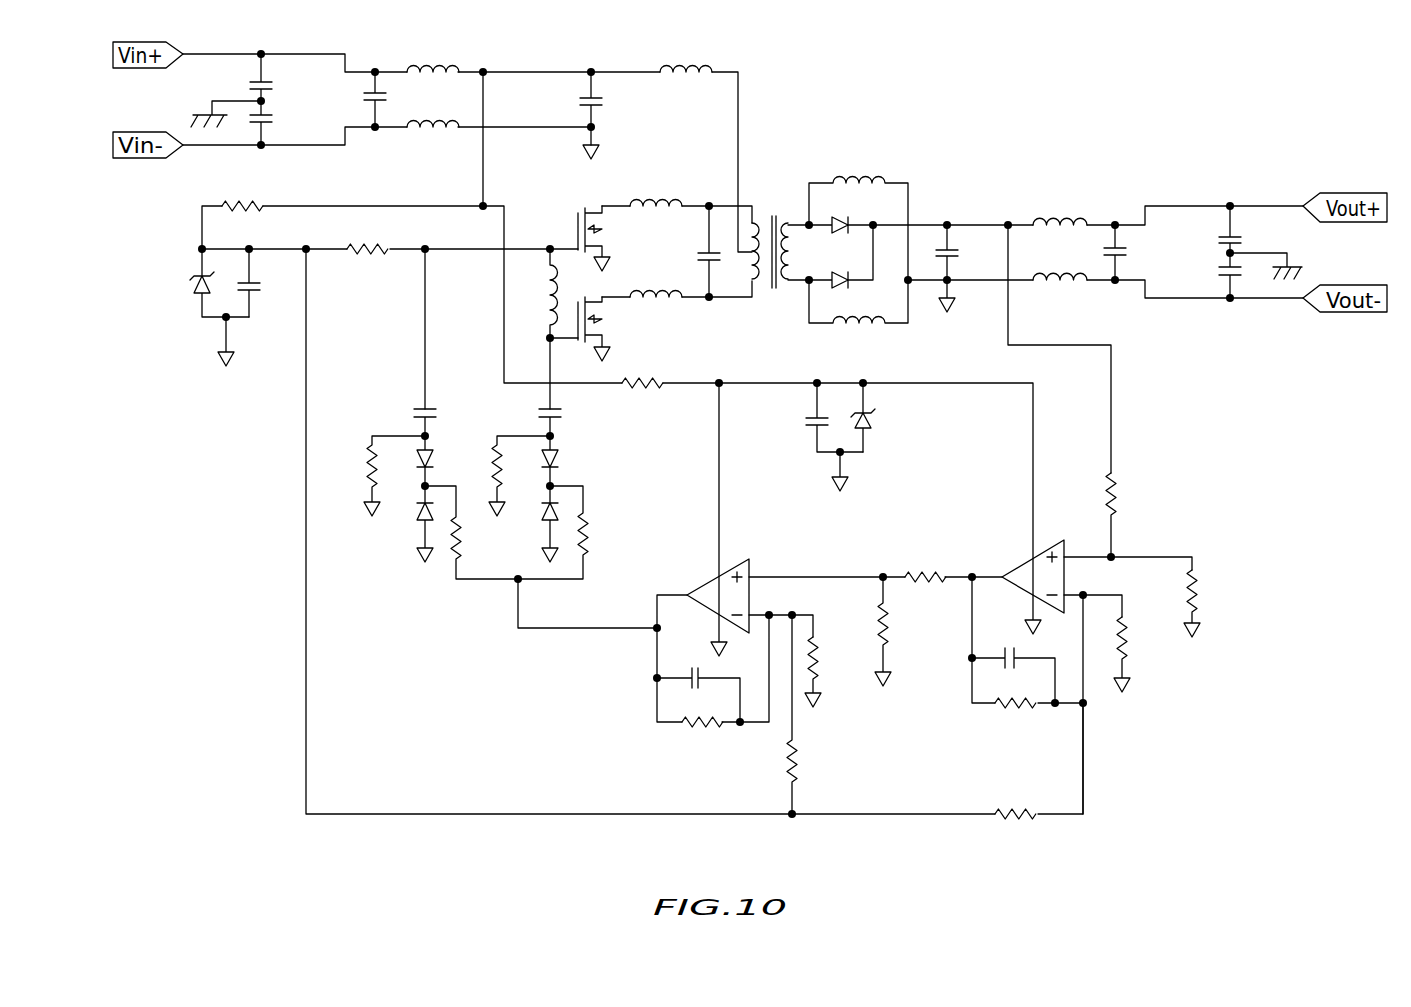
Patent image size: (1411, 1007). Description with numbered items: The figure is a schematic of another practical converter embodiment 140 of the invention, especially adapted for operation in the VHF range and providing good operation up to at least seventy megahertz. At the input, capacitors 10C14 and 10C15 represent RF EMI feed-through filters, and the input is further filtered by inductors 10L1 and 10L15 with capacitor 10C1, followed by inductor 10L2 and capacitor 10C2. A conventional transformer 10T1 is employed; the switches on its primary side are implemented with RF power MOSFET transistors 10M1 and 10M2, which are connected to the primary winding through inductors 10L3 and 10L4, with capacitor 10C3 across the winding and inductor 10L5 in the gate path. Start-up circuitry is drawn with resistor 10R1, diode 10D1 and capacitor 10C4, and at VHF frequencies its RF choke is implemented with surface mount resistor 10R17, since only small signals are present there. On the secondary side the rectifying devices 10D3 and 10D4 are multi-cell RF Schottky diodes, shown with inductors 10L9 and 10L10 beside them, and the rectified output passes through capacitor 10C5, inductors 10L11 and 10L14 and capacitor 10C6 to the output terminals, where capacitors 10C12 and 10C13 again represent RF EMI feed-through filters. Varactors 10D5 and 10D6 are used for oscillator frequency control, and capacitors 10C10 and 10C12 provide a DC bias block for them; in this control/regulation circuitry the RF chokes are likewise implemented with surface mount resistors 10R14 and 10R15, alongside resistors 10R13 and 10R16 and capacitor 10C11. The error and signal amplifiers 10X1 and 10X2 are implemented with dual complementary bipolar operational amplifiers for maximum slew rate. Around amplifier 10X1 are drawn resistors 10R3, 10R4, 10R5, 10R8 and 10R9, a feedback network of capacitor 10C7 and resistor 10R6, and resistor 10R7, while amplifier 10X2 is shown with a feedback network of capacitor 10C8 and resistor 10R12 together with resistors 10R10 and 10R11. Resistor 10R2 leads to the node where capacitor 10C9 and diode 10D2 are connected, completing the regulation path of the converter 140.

The converter embodiment 140 is at (973, 111).
The capacitor 10C1 is at (357, 99).
The capacitor 10C2 is at (611, 99).
The capacitor 10C3 is at (695, 251).
The capacitor 10C4 is at (264, 283).
The capacitor 10C5 is at (965, 268).
The capacitor 10C6 is at (1134, 252).
The capacitor 10C7 is at (1013, 662).
The capacitor 10C8 is at (698, 682).
The capacitor 10C9 is at (821, 437).
The capacitor 10C10 is at (402, 419).
The capacitor 10C11 is at (527, 419).
The capacitor 10C12 is at (1206, 275).
The capacitor 10C13 is at (1253, 229).
The capacitor 10C14 is at (238, 77).
The capacitor 10C15 is at (285, 123).
The inductor 10L1 is at (433, 55).
The inductor 10L2 is at (686, 55).
The inductor 10L3 is at (656, 188).
The inductor 10L4 is at (656, 278).
The inductor 10L5 is at (545, 293).
The inductor 10L9 is at (858, 215).
The inductor 10L10 is at (858, 316).
The inductor 10L11 is at (1060, 207).
The inductor 10L14 is at (1060, 261).
The inductor 10L15 is at (433, 110).
The resistor 10R1 is at (242, 193).
The resistor 10R2 is at (642, 400).
The resistor 10R3 is at (1130, 515).
The resistor 10R4 is at (1209, 603).
The resistor 10R5 is at (1139, 654).
The resistor 10R6 is at (1015, 718).
The resistor 10R7 is at (1015, 799).
The resistor 10R8 is at (925, 562).
The resistor 10R9 is at (901, 631).
The resistor 10R10 is at (835, 672).
The resistor 10R11 is at (815, 714).
The resistor 10R12 is at (701, 738).
The resistor 10R13 is at (577, 532).
The surface mount resistor 10R14 is at (471, 532).
The surface mount resistor 10R15 is at (497, 476).
The resistor 10R16 is at (372, 476).
The surface mount resistor 10R17 is at (366, 236).
The zener diode 10D1 is at (198, 307).
The zener diode 10D2 is at (882, 417).
The rectifier diode 10D3 is at (846, 214).
The rectifier diode 10D4 is at (836, 256).
The varactor 10D5 is at (408, 499).
The varactor 10D6 is at (534, 499).
The MOSFET switch 10M1 is at (611, 238).
The MOSFET switch 10M2 is at (611, 329).
The transformer 10T1 is at (780, 241).
The operational amplifier 10X1 is at (1028, 573).
The operational amplifier 10X2 is at (707, 596).